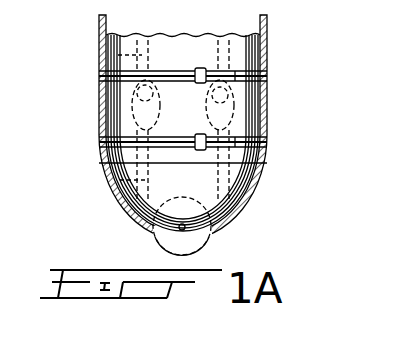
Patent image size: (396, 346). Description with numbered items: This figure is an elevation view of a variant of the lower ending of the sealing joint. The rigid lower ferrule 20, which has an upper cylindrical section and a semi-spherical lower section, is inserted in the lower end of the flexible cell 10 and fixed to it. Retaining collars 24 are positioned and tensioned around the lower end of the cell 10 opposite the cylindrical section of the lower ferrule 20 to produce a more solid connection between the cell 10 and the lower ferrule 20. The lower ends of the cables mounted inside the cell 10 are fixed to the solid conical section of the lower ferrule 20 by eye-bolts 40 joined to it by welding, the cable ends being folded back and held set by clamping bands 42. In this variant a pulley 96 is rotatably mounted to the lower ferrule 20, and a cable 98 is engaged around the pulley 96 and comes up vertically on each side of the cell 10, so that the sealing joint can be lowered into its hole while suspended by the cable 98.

The cell 10 is at (191, 42).
The clamping bands 42 is at (106, 57).
The cable 98 is at (100, 123).
The eye-bolts 40 is at (108, 187).
The retaining collars 24 is at (186, 86).
The lower ferrule 20 is at (187, 178).
The pulley 96 is at (205, 240).